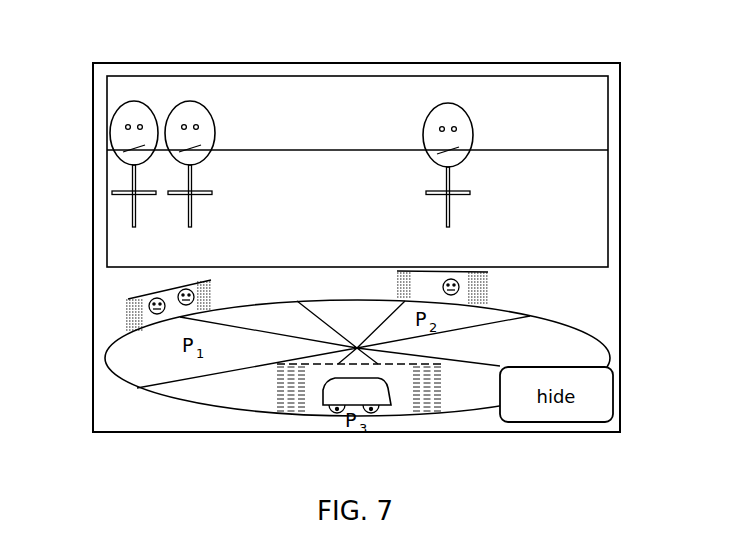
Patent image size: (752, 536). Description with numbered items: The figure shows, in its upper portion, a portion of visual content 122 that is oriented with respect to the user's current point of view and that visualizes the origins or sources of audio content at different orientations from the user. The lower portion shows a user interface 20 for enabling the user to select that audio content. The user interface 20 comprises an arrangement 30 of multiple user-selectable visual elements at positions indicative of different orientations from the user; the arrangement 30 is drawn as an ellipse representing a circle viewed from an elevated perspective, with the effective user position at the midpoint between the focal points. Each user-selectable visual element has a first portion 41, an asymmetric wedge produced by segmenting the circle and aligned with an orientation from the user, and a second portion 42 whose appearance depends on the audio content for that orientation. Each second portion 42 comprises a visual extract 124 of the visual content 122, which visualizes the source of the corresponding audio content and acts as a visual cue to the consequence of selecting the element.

The user interface 20 is at (615, 289).
The arrangement 30 is at (107, 413).
The first portion 41 is at (150, 350).
The second portion 42 is at (213, 295).
The visual content 122 is at (344, 121).
The visual extract 124 is at (160, 297).